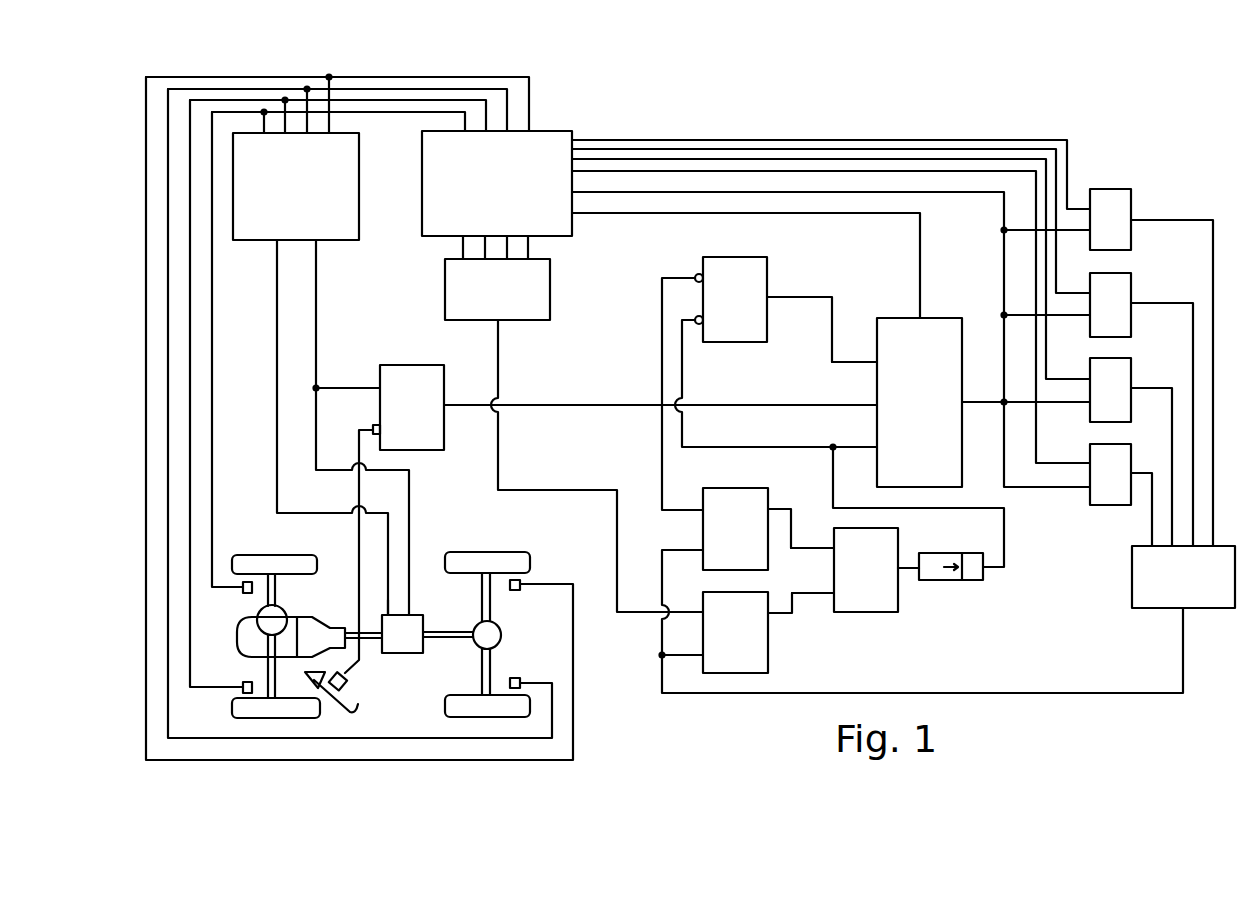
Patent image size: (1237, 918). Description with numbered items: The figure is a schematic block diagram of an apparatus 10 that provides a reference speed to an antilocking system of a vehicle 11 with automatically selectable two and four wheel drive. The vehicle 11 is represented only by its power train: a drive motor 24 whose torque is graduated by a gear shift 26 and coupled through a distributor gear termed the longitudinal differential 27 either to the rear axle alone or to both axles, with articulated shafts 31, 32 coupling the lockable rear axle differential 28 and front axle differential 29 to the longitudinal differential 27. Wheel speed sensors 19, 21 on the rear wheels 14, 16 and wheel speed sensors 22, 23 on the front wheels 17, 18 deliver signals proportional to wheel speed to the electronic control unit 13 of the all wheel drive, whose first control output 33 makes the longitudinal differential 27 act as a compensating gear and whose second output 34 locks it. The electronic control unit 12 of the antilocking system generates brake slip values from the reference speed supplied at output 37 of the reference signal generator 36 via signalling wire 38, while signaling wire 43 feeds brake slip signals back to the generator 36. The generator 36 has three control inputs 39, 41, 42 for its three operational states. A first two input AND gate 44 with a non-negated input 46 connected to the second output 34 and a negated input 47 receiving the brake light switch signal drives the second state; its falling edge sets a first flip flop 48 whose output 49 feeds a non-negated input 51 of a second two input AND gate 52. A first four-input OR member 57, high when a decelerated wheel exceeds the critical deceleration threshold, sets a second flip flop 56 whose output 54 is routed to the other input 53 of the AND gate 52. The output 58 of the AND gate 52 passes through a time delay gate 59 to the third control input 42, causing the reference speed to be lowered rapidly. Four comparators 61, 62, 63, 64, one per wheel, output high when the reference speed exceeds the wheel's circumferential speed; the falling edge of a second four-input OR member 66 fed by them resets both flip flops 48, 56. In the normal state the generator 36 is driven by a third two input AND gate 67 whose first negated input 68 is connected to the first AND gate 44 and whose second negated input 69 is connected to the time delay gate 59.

The apparatus 10 is at (960, 101).
The vehicle 11 is at (400, 670).
The electronic control unit of the antilocking system 12 is at (422, 157).
The electronic control unit of the all wheel drive 13 is at (359, 206).
The rear wheel 14 is at (458, 698).
The rear wheel 16 is at (460, 570).
The front wheel 17 is at (240, 712).
The front wheel 18 is at (252, 558).
The wheel speed sensor 19 is at (515, 678).
The wheel speed sensor 21 is at (516, 591).
The wheel speed sensor 22 is at (243, 684).
The wheel speed sensor 23 is at (243, 592).
The drive motor 24 is at (237, 638).
The gear shift 26 is at (324, 626).
The longitudinal differential 27 is at (387, 618).
The rear axle differential 28 is at (501, 635).
The front axle differential 29 is at (283, 613).
The articulated shaft 31 is at (426, 648).
The articulated shaft 32 is at (371, 640).
The first control output 33 is at (276, 250).
The second output 34 is at (322, 248).
The reference signal generator 36 is at (896, 320).
The output 37 is at (964, 400).
The signalling wire 38 is at (956, 193).
The first control input 39 is at (860, 361).
The second control input 41 is at (870, 403).
The third control input 42 is at (869, 446).
The signaling wire 43 is at (855, 214).
The first two input AND gate 44 is at (445, 393).
The non-negated input 46 is at (371, 386).
The negated input 47 is at (373, 428).
The first flip flop 48 is at (734, 498).
The output 49 is at (780, 500).
The non-negated input 51 is at (823, 546).
The second two input AND gate 52 is at (890, 545).
The input line 53 is at (832, 597).
The output 54 is at (770, 615).
The second flip flop 56 is at (760, 658).
The first four-input OR member 57 is at (550, 287).
The output 58 is at (905, 572).
The time delay gate 59 is at (955, 553).
The comparator 61 is at (1125, 462).
The comparator 62 is at (1125, 378).
The comparator 63 is at (1125, 292).
The comparator 64 is at (1125, 206).
The second four-input OR member 66 is at (1132, 582).
The third two input AND gate 67 is at (733, 343).
The first negated input 68 is at (696, 273).
The second negated input 69 is at (697, 332).